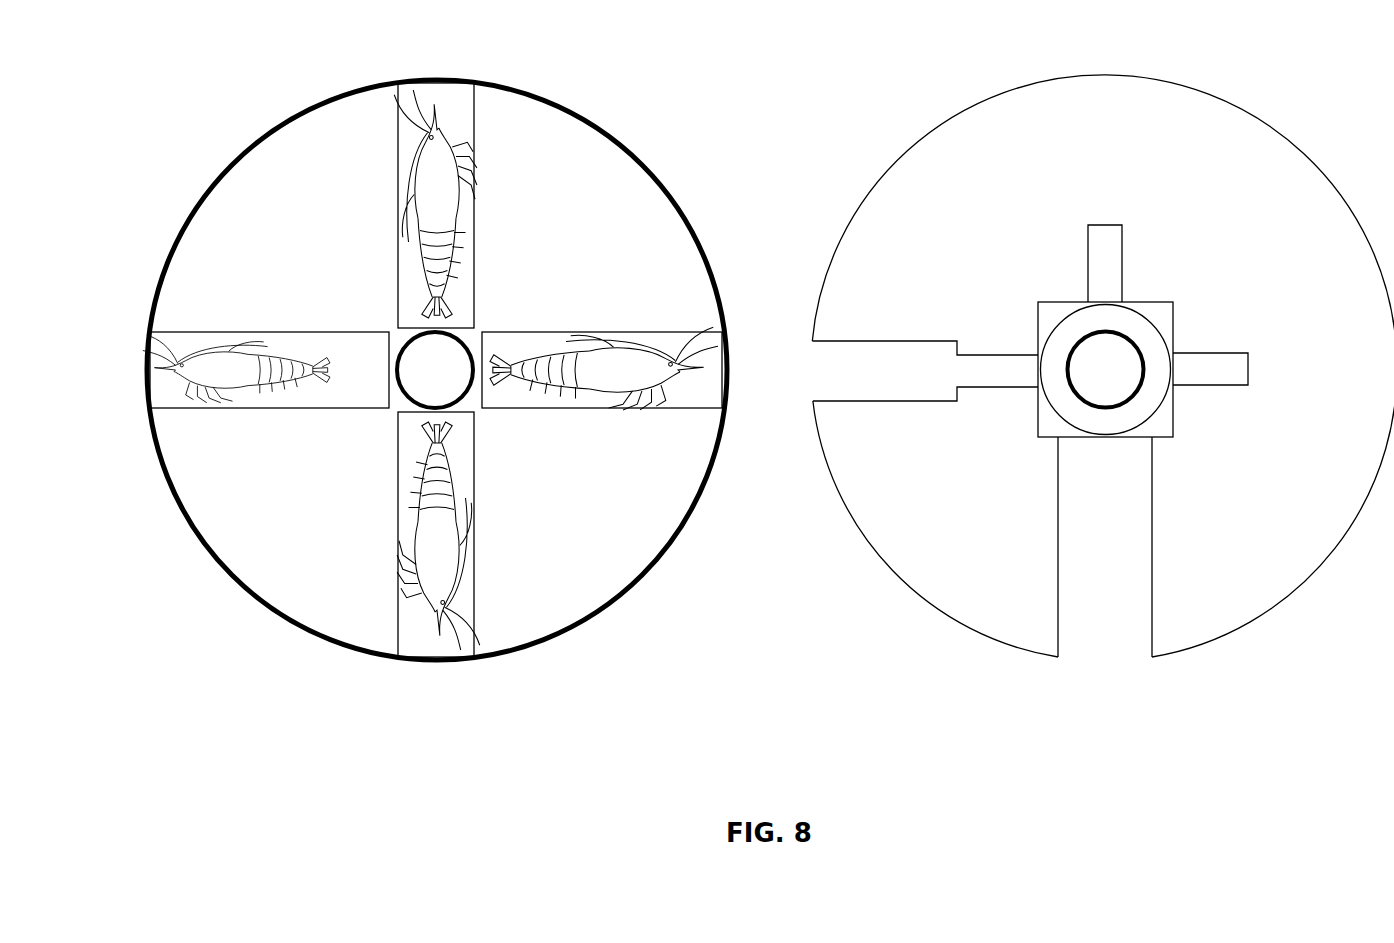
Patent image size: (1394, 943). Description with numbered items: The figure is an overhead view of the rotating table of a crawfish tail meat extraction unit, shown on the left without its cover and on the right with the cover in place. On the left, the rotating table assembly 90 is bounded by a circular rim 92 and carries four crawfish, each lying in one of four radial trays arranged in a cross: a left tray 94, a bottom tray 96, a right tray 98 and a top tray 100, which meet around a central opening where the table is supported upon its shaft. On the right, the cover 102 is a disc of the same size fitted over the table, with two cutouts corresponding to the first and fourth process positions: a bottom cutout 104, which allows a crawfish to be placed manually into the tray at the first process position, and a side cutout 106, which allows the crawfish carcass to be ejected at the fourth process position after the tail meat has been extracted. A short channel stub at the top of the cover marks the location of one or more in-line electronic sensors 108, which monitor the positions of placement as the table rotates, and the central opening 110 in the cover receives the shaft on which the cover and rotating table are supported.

The shrimp holding tray 90 is at (422, 342).
The circular rim 92 is at (198, 567).
The left shrimp slot 94 is at (295, 325).
The bottom shrimp slot 96 is at (392, 487).
The right shrimp slot 98 is at (582, 417).
The top shrimp slot 100 is at (480, 250).
The disc body 102 is at (888, 157).
The cutout 104 is at (1105, 625).
The cutout 106 is at (887, 368).
The in-line electronic sensor 108 is at (1102, 222).
The central opening 110 is at (1120, 360).